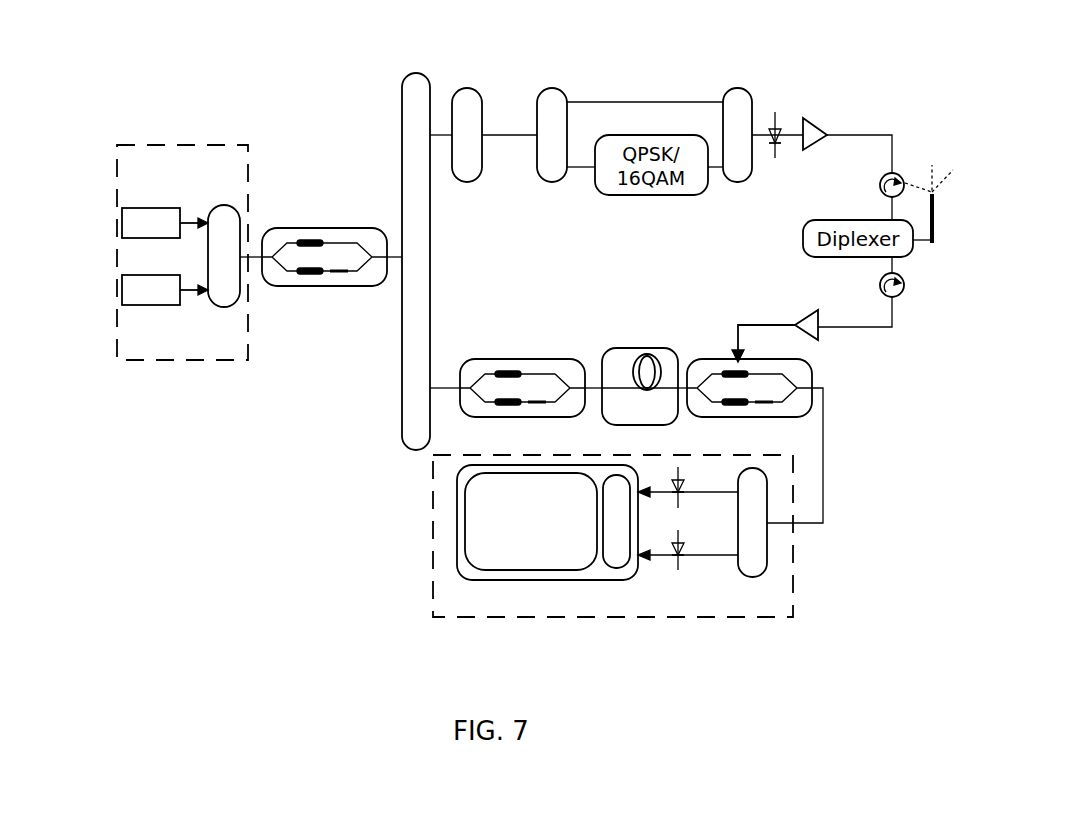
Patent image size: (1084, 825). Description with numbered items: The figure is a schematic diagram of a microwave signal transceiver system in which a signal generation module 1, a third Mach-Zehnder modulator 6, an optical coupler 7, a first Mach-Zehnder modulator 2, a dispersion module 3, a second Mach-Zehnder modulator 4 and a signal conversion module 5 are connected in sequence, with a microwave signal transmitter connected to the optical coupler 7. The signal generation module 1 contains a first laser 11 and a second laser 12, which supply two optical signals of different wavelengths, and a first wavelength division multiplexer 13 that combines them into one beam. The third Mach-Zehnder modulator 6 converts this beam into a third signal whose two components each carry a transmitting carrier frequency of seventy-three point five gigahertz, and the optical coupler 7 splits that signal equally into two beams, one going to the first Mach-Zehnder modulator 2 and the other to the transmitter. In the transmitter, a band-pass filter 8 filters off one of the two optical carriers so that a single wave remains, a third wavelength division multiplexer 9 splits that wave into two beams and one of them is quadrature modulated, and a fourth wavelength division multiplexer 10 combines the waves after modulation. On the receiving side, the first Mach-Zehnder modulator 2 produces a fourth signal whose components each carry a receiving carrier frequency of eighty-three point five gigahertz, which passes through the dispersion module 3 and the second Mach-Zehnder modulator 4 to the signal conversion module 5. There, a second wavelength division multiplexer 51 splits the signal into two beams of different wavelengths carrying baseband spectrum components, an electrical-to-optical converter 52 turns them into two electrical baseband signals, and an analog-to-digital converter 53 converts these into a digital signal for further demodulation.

The signal generation module 1 is at (248, 212).
The first laser 11 is at (122, 222).
The second laser 12 is at (122, 287).
The first wavelength division multiplexer 13 is at (210, 208).
The third Mach-Zehnder modulator 6 is at (317, 228).
The optical coupler 7 is at (430, 270).
The band-pass filter 8 is at (485, 112).
The third wavelength division multiplexer 9 is at (565, 90).
The fourth wavelength division multiplexer 10 is at (755, 112).
The first Mach-Zehnder modulator 2 is at (503, 359).
The dispersion module 3 is at (627, 345).
The second Mach-Zehnder modulator 4 is at (698, 362).
The signal conversion module 5 is at (433, 532).
The second wavelength division multiplexer 51 is at (745, 577).
The electrical-to-optical converter 52 is at (675, 568).
The analog-to-digital converter 53 is at (592, 583).